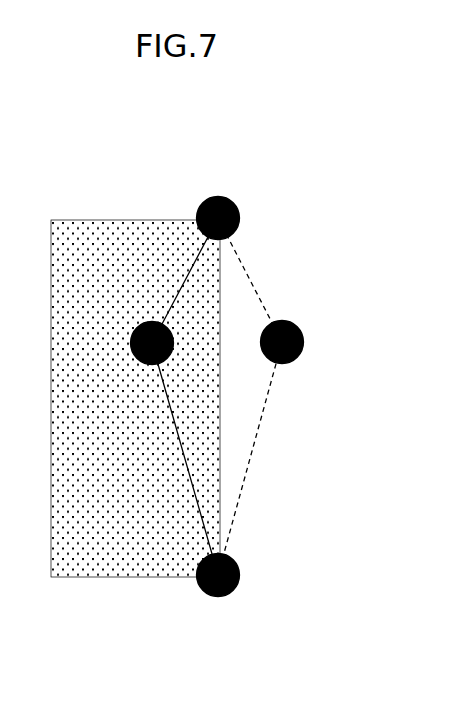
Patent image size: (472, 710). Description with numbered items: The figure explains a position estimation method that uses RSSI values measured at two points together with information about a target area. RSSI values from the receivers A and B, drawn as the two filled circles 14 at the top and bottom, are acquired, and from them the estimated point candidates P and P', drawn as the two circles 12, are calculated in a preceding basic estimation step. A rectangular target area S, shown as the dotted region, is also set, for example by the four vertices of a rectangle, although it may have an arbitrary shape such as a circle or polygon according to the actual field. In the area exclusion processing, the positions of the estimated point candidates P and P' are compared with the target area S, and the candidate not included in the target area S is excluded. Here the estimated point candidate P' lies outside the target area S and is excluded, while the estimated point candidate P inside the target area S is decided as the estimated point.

The intermediate point (P, P') 12 is at (150, 322).
The end point (A, B) 14 is at (215, 197).
The target area S is at (105, 577).
The receiver A is at (262, 218).
The receiver B is at (262, 574).
The estimated point candidate P is at (110, 344).
The estimated point candidate P' is at (322, 344).